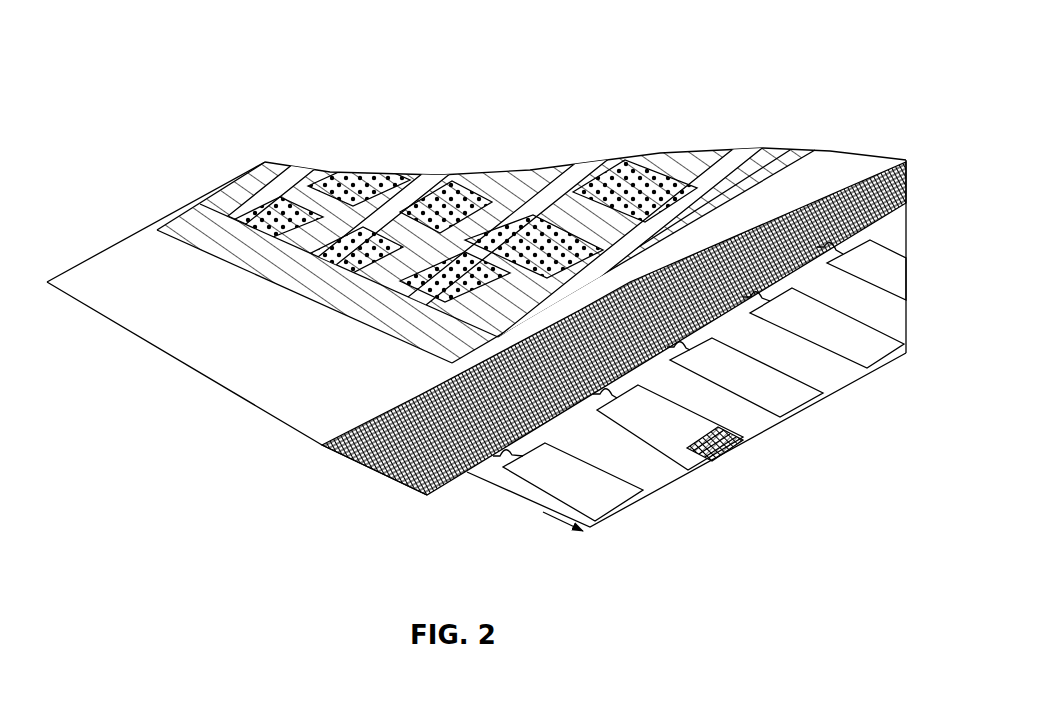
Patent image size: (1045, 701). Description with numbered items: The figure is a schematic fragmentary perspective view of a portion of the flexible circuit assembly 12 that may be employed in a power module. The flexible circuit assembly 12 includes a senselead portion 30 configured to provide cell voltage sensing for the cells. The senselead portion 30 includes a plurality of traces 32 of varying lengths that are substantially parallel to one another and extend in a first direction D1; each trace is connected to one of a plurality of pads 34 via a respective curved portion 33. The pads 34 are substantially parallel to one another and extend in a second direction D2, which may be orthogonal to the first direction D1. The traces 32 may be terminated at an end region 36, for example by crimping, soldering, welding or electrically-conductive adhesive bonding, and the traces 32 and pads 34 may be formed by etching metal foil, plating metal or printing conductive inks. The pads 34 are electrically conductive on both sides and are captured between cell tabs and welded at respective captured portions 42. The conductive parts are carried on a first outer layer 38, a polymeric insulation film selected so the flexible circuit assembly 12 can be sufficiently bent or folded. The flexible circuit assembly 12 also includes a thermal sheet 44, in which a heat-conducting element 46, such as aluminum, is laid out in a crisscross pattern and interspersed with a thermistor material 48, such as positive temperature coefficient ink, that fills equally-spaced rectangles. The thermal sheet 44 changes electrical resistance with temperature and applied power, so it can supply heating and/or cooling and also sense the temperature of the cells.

The flexible circuit assembly 12 is at (212, 405).
The senselead portion 30 is at (512, 500).
The traces 32 is at (387, 406).
The curved portion 33 is at (773, 292).
The pads 34 is at (623, 504).
The end region 36 is at (373, 474).
The first outer layer 38 is at (126, 320).
The captured portions 42 is at (745, 440).
The thermal sheet 44 is at (238, 268).
The heat-conducting element 46 is at (263, 163).
The thermistor material 48 is at (465, 186).
The first direction D1 is at (320, 430).
The second direction D2 is at (544, 514).